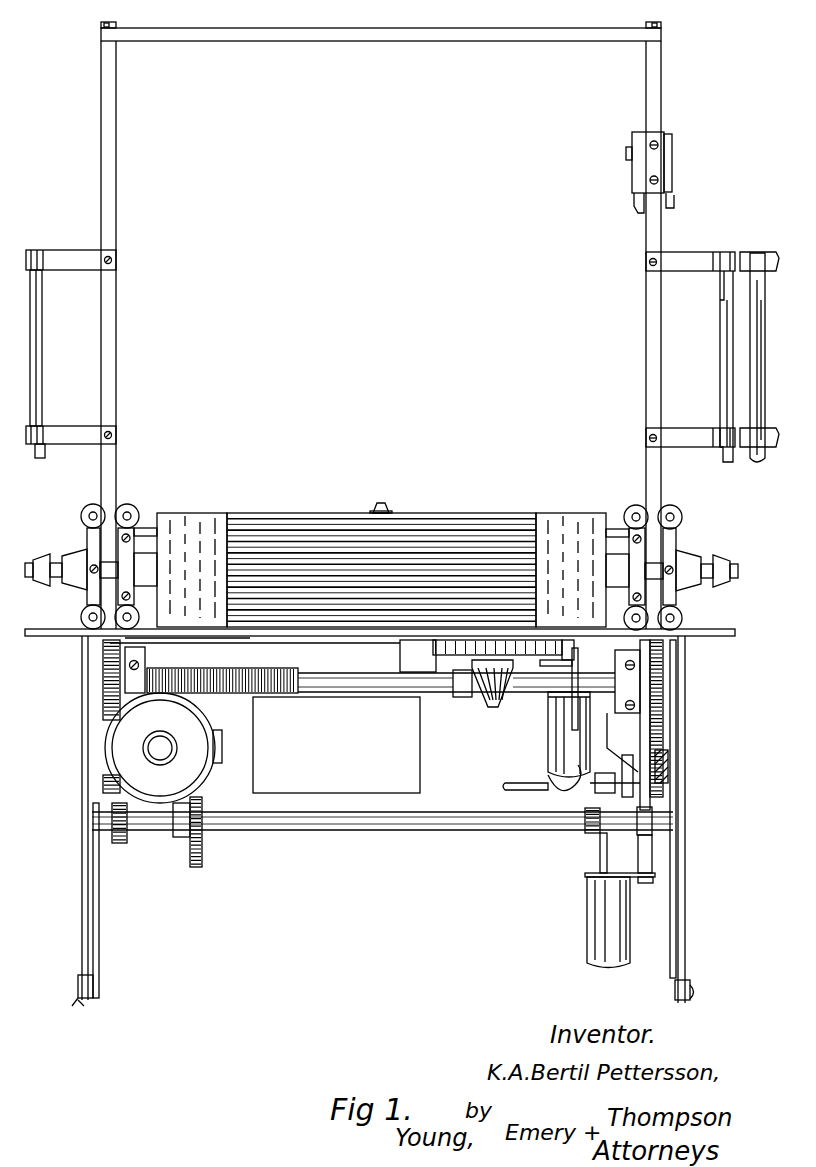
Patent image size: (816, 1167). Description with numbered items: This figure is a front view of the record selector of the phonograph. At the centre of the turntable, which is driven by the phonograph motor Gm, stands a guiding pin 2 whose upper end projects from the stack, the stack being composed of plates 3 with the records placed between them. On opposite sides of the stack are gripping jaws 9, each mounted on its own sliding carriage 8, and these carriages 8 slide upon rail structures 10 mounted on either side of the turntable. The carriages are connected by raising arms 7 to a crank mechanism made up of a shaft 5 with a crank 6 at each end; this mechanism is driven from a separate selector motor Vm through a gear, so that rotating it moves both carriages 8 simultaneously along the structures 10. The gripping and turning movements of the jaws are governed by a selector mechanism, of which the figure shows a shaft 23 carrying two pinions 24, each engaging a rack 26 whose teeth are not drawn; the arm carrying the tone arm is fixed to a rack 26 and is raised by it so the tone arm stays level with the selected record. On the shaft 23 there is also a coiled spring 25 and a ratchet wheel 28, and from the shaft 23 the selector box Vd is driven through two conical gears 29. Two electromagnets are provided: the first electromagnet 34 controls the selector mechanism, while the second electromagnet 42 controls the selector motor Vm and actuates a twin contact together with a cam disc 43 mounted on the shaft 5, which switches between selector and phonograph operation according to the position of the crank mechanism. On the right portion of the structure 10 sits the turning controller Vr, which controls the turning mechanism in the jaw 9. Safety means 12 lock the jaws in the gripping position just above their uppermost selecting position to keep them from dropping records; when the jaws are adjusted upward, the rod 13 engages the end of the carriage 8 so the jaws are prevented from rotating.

The guiding pin 2 is at (386, 506).
The plates 3 is at (465, 530).
The shaft 5 is at (360, 822).
The crank 6 is at (96, 924).
The raising arms 7 is at (85, 860).
The sliding carriage 8 is at (73, 556).
The gripping jaws 9 is at (193, 513).
The rail structures 10 is at (108, 77).
The safety means 12 is at (60, 258).
The rod 13 is at (760, 376).
The shaft 23 is at (431, 683).
The pinions 24 is at (108, 689).
The coiled spring 25 is at (228, 682).
The rack 26 is at (103, 784).
The ratchet wheel 28 is at (572, 681).
The conical gears 29 is at (490, 702).
The electromagnet 34 is at (556, 726).
The electromagnet 42 is at (598, 946).
The cam disc 43 is at (593, 836).
The turning controller Vr is at (660, 134).
The selector motor Vm is at (163, 748).
The phonograph motor Gm is at (336, 745).
The selector box Vd is at (487, 656).